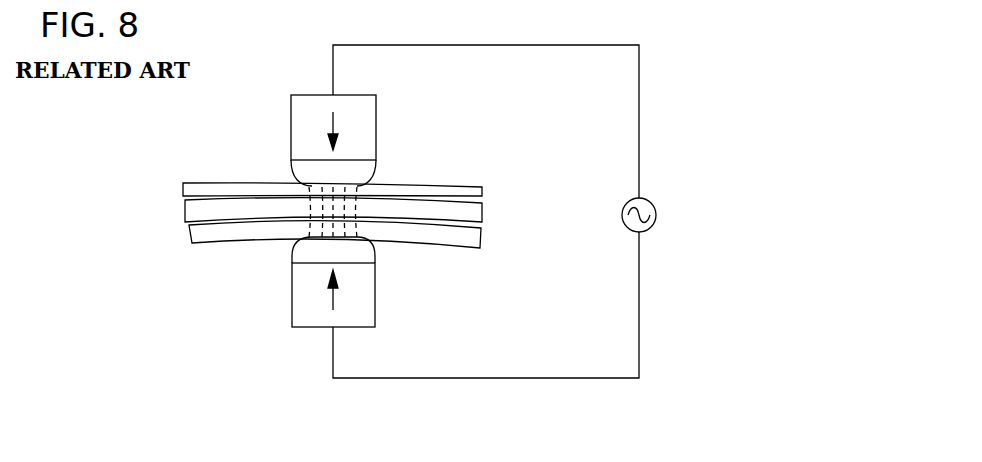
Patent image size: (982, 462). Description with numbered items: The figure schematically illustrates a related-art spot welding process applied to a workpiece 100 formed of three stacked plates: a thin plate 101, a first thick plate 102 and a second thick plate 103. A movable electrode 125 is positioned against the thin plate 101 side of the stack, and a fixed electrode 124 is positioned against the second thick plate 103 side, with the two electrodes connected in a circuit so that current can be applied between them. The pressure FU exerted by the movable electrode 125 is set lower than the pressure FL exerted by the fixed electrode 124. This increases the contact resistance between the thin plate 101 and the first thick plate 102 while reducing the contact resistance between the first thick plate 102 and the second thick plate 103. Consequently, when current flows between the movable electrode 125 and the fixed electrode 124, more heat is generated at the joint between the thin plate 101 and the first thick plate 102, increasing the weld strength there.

The workpiece 100 is at (289, 188).
The thin plate 101 is at (186, 188).
The first thick plate 102 is at (190, 211).
The second thick plate 103 is at (191, 236).
The fixed electrode 124 is at (302, 295).
The movable electrode 125 is at (300, 131).